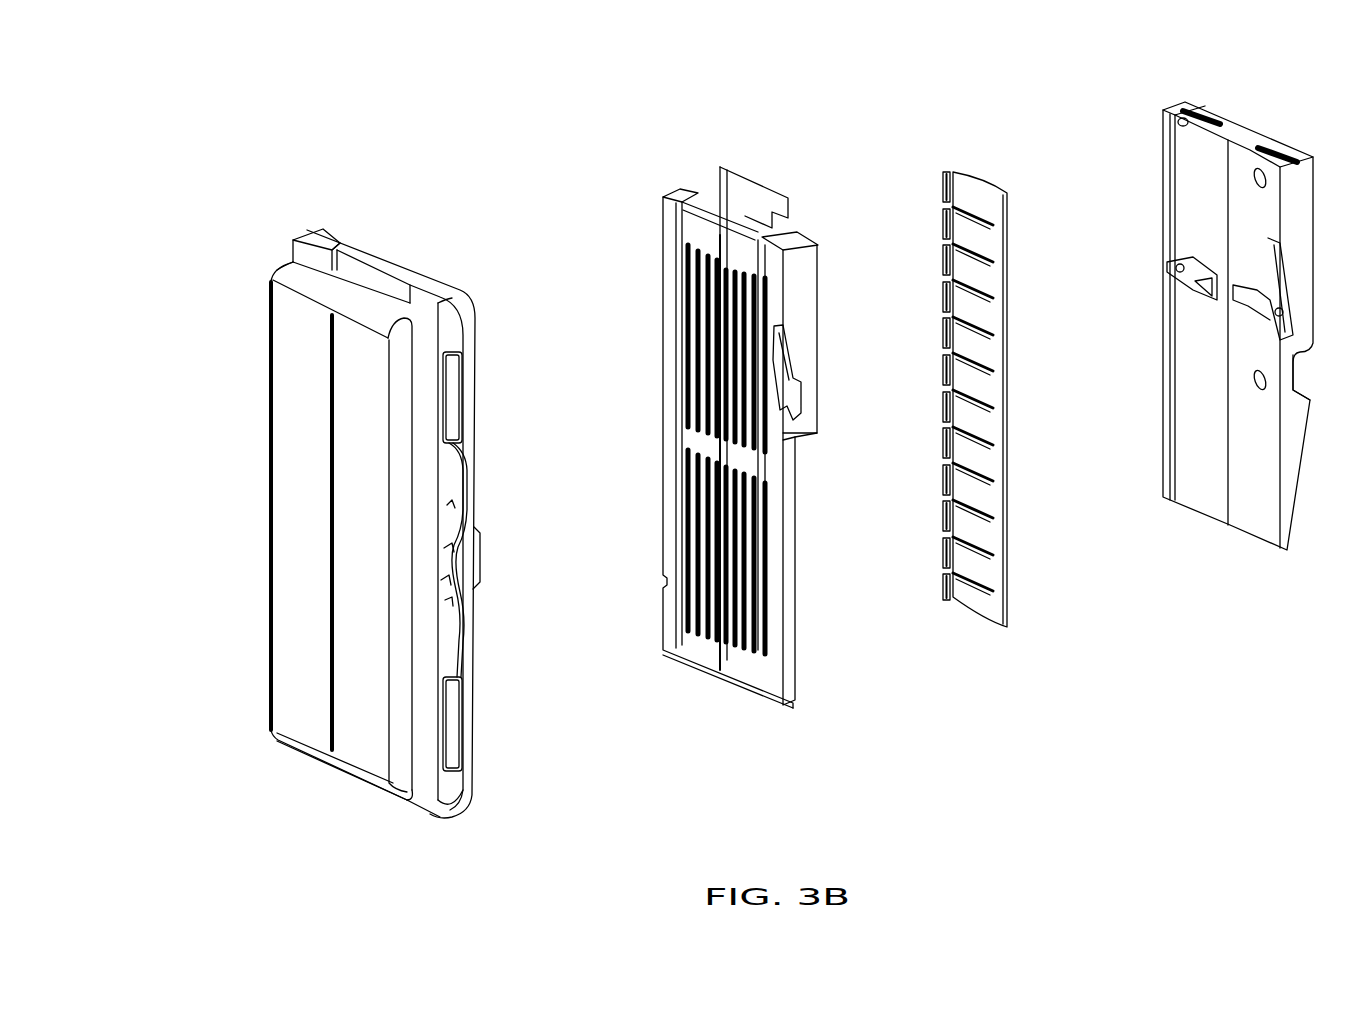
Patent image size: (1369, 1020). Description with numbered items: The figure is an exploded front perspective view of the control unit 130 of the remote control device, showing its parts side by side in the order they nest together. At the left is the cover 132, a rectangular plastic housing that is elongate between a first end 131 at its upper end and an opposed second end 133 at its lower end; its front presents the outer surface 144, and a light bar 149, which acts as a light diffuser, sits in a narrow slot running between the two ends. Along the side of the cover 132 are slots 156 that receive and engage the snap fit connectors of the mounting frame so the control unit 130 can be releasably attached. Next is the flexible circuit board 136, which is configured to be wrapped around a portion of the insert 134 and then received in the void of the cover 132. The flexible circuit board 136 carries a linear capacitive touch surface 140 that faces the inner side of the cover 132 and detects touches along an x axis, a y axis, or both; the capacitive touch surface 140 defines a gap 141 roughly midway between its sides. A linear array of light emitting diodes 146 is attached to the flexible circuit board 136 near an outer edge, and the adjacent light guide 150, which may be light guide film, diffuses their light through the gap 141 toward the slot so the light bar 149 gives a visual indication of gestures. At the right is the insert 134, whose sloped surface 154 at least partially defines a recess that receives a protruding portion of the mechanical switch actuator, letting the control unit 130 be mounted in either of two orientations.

The control unit 130 is at (205, 105).
The first end 131 is at (300, 247).
The cover 132 is at (392, 257).
The second end 133 is at (297, 760).
The insert 134 is at (1320, 190).
The flexible circuit board 136 is at (660, 295).
The capacitive touch surface 140 is at (703, 653).
The gap 141 is at (722, 232).
The outer surface 144 is at (305, 380).
The light emitting diodes 146 is at (942, 270).
The light bar 149 is at (325, 500).
The light guide 150 is at (1009, 253).
The sloped surface 154 is at (1303, 477).
The slots 156 is at (456, 400).